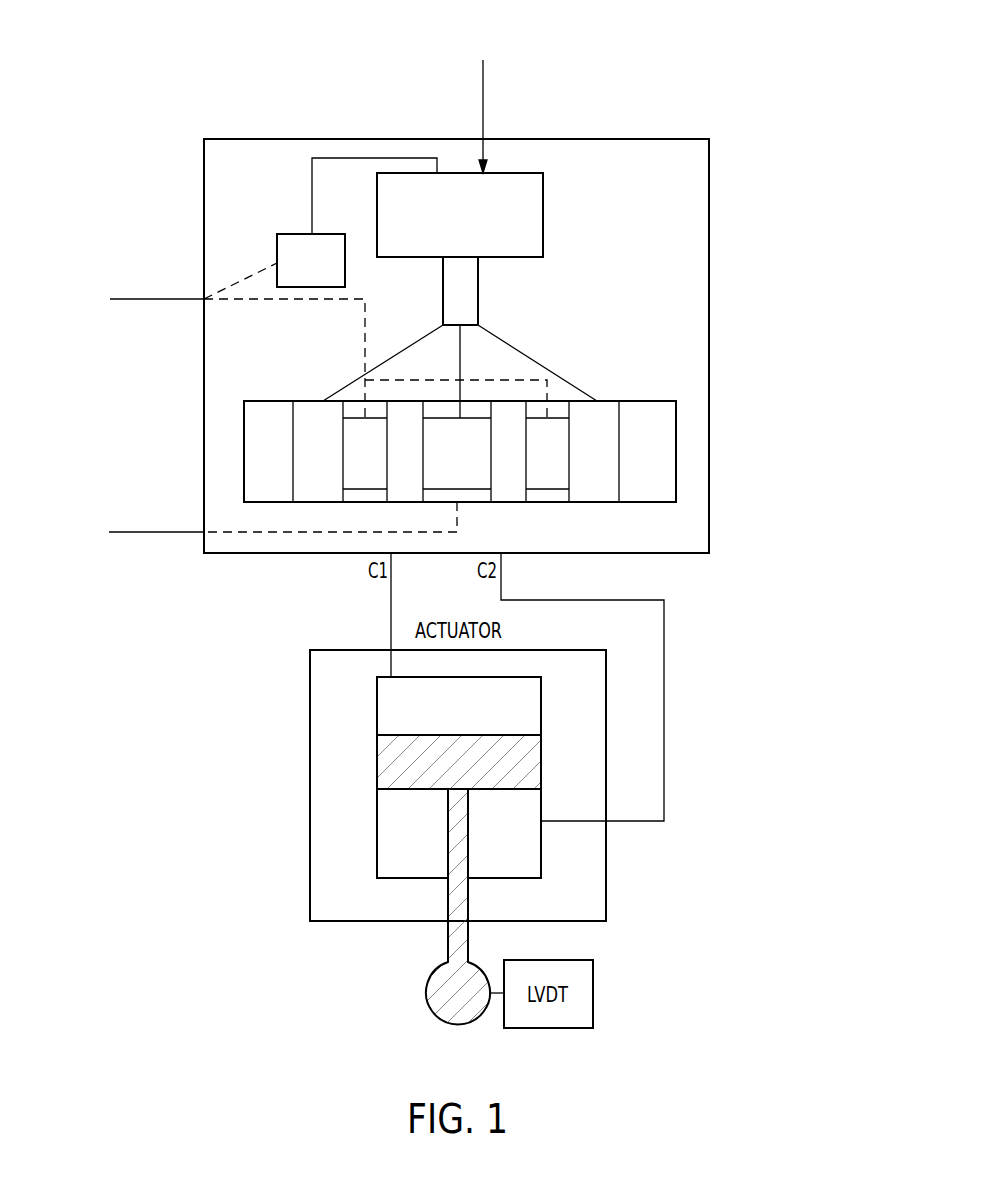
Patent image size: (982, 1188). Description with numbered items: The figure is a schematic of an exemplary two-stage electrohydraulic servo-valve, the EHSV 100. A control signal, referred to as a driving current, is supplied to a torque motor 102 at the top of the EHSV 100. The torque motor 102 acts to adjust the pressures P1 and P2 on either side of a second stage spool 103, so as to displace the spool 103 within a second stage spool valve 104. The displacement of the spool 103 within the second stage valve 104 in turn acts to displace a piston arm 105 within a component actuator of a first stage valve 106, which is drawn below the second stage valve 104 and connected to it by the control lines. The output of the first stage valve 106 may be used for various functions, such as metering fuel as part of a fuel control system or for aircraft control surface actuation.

The EHSV 100 is at (162, 107).
The torque motor 102 is at (543, 214).
The second stage spool 103 is at (547, 480).
The second stage spool valve 104 is at (676, 444).
The piston arm 105 is at (377, 760).
The first stage valve 106 is at (541, 842).